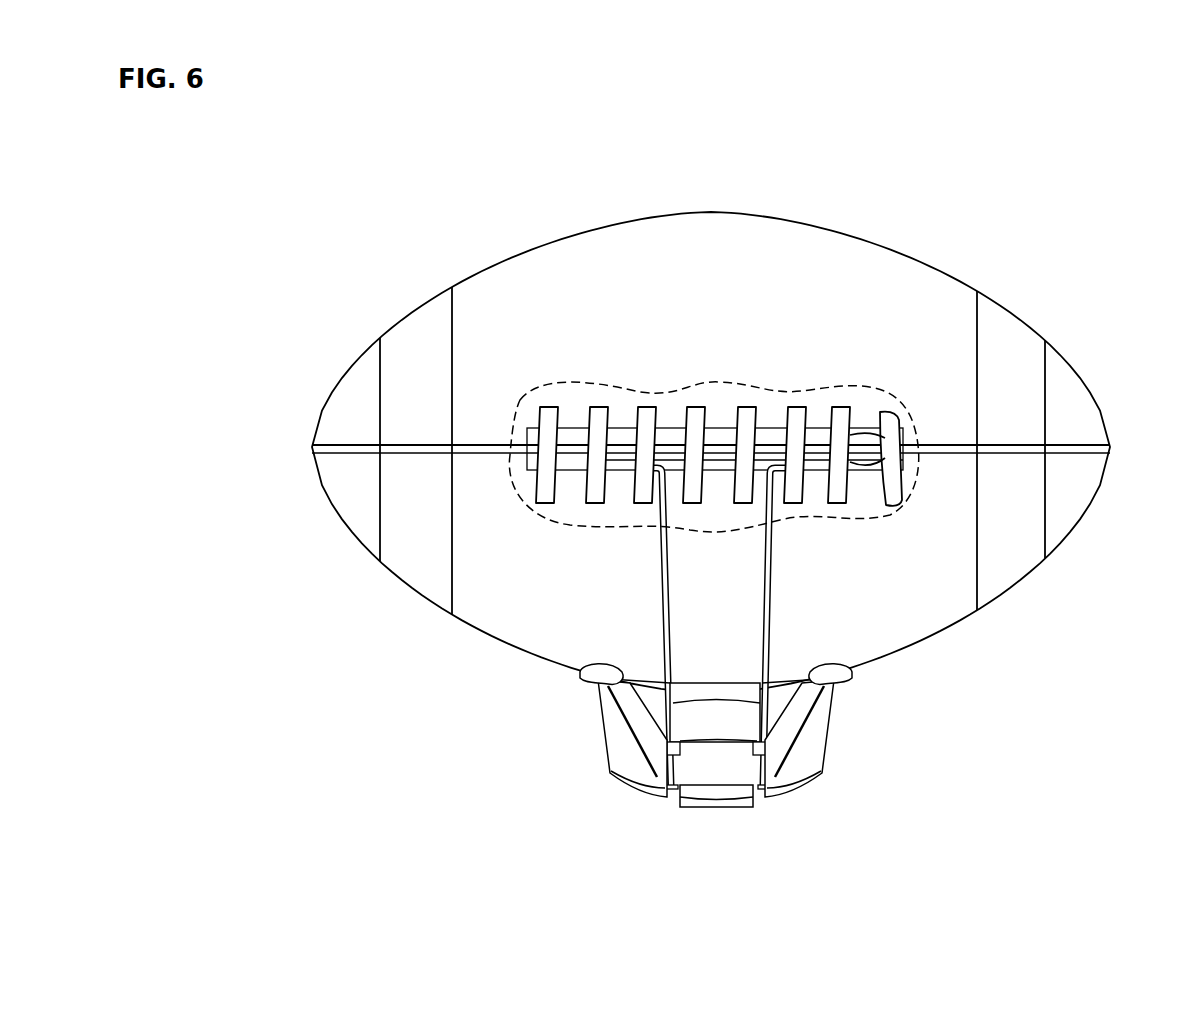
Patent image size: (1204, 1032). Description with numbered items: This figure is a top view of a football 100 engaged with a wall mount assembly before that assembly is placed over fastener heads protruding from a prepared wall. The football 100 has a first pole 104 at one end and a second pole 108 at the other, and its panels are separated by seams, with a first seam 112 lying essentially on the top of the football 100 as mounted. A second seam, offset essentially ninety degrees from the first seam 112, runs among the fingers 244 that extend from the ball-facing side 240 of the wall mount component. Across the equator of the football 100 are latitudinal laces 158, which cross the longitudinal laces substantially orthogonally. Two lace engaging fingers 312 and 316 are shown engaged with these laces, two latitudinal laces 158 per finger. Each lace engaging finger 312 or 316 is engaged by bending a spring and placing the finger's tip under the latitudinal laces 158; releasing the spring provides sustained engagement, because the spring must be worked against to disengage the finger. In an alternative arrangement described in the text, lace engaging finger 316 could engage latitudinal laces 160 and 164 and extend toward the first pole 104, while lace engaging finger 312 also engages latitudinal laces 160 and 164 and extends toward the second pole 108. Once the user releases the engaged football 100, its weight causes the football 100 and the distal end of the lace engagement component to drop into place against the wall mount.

The football 100 is at (906, 336).
The first pole 104 is at (1110, 443).
The second pole 108 is at (308, 442).
The seam 112 is at (972, 438).
The latitudinal laces 158 is at (795, 420).
The latitudinal lace 160 is at (690, 420).
The latitudinal lace 164 is at (745, 420).
The ball-facing side 240 is at (713, 693).
The fingers 244 is at (843, 673).
The lace engaging finger 312 is at (658, 569).
The lace engaging finger 316 is at (773, 570).